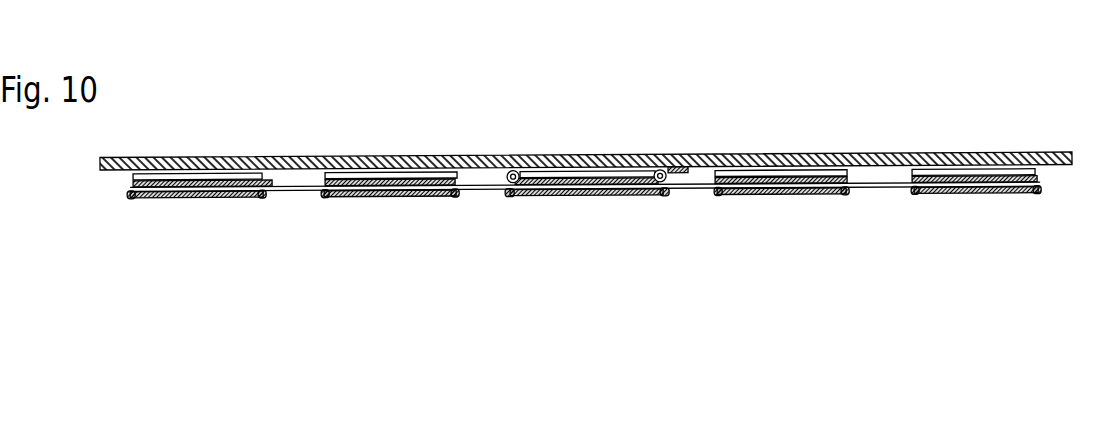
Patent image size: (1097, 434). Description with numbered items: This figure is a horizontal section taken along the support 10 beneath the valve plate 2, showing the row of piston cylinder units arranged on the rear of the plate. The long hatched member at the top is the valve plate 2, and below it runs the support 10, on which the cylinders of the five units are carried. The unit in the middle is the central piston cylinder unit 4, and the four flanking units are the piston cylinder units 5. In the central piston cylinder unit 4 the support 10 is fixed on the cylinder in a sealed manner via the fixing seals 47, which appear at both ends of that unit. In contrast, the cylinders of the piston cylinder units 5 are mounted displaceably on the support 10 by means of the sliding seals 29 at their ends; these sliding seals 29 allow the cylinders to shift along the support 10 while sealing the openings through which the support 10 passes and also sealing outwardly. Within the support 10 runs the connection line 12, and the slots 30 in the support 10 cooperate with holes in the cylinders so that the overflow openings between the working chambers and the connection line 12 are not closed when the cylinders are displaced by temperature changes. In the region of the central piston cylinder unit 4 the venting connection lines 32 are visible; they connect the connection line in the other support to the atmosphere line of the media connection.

The valve plate 2 is at (863, 160).
The central piston cylinder unit 4 is at (605, 197).
The piston cylinder unit 5 is at (210, 198).
The support 10 is at (298, 186).
The connection line 12 is at (275, 190).
The sliding seal 29 is at (138, 198).
The slot 30 is at (197, 198).
The venting connection line 32 is at (516, 172).
The fixing seal 47 is at (512, 198).